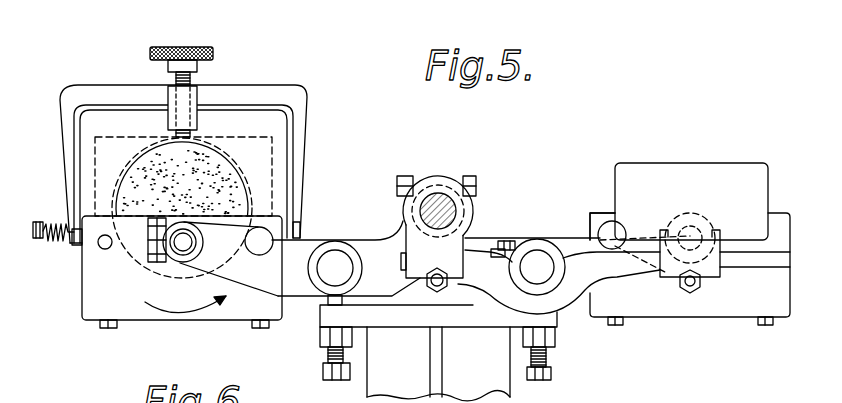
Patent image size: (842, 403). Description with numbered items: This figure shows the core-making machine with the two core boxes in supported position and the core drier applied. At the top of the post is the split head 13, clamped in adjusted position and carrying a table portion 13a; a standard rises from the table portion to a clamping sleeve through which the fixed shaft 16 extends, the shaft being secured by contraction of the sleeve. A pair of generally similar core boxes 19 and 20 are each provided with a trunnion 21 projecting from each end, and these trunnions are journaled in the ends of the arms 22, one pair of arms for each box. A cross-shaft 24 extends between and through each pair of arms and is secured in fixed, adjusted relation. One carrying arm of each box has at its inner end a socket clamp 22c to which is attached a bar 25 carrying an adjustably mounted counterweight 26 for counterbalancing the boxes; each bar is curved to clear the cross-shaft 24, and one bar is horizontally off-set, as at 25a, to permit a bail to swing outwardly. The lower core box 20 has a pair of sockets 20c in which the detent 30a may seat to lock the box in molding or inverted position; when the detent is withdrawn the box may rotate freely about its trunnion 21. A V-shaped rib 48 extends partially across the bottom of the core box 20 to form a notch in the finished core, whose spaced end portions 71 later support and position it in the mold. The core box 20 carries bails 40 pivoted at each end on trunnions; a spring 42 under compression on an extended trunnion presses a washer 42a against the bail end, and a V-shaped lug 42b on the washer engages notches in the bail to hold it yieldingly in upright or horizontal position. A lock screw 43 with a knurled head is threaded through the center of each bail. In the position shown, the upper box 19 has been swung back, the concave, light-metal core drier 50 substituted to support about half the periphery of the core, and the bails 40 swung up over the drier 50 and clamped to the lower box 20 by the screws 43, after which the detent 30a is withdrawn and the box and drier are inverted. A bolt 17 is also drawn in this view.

The head 13 is at (502, 390).
The table portion 13a is at (321, 317).
The fixed shaft 16 is at (442, 212).
The bolt 17 is at (551, 369).
The core box 19 is at (725, 308).
The core box 20 is at (148, 321).
The sockets 20c is at (108, 249).
The trunnion 21 is at (203, 242).
The arms 22 is at (536, 256).
The socket clamp 22c is at (446, 290).
The cross-shaft 24 is at (336, 258).
The bar 25 is at (634, 262).
The horizontal off-set 25a is at (568, 256).
The counterweight 26 is at (717, 170).
The detent 30a is at (610, 222).
The bail 40 is at (262, 88).
The spring 42 is at (52, 222).
The washer 42a is at (70, 246).
The V-shaped lug 42b is at (79, 247).
The lock screw 43 is at (183, 47).
The V-shaped rib 48 is at (192, 287).
The core drier 50 is at (287, 139).
The end portions 71 is at (182, 208).